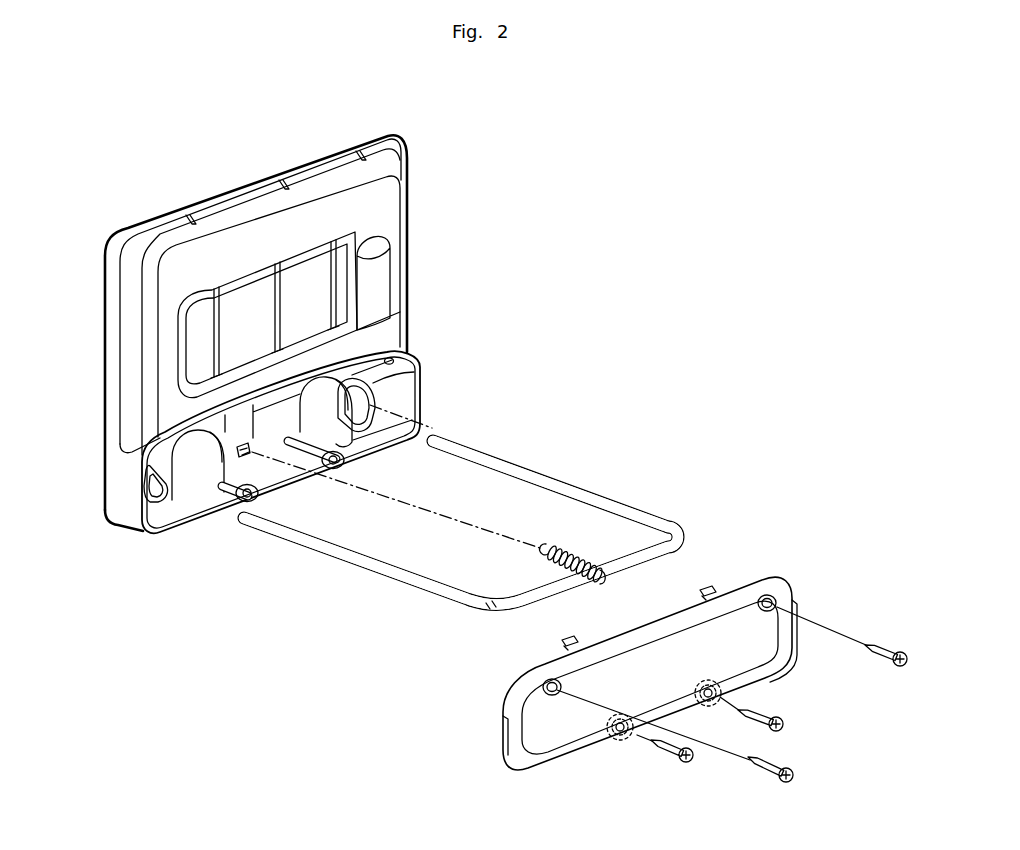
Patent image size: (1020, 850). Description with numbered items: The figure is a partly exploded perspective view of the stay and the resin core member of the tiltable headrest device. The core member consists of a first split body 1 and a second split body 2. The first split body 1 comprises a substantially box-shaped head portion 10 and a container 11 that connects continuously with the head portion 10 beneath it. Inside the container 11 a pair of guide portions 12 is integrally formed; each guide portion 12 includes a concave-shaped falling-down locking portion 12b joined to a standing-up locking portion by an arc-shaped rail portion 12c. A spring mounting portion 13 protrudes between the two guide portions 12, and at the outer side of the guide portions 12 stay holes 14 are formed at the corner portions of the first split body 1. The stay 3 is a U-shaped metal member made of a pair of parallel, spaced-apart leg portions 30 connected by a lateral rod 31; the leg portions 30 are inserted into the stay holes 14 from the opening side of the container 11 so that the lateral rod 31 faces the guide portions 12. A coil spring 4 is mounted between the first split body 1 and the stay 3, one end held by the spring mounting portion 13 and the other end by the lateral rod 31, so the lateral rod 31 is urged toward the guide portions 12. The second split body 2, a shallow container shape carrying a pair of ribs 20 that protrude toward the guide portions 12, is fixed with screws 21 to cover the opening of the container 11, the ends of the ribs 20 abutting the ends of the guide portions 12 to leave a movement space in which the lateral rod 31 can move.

The first split body 1 is at (405, 201).
The head portion 10 is at (253, 237).
The container 11 is at (100, 443).
The guide portions 12 is at (333, 370).
The falling-down locking portion 12b is at (240, 505).
The rail portion 12c is at (216, 460).
The spring mounting portion 13 is at (273, 482).
The stay holes 14 is at (347, 403).
The second split body 2 is at (512, 694).
The ribs 20 is at (567, 642).
The screws 21 is at (884, 647).
The stay 3 is at (463, 511).
The leg portions 30 is at (540, 472).
The lateral rod 31 is at (540, 587).
The coil spring 4 is at (580, 553).